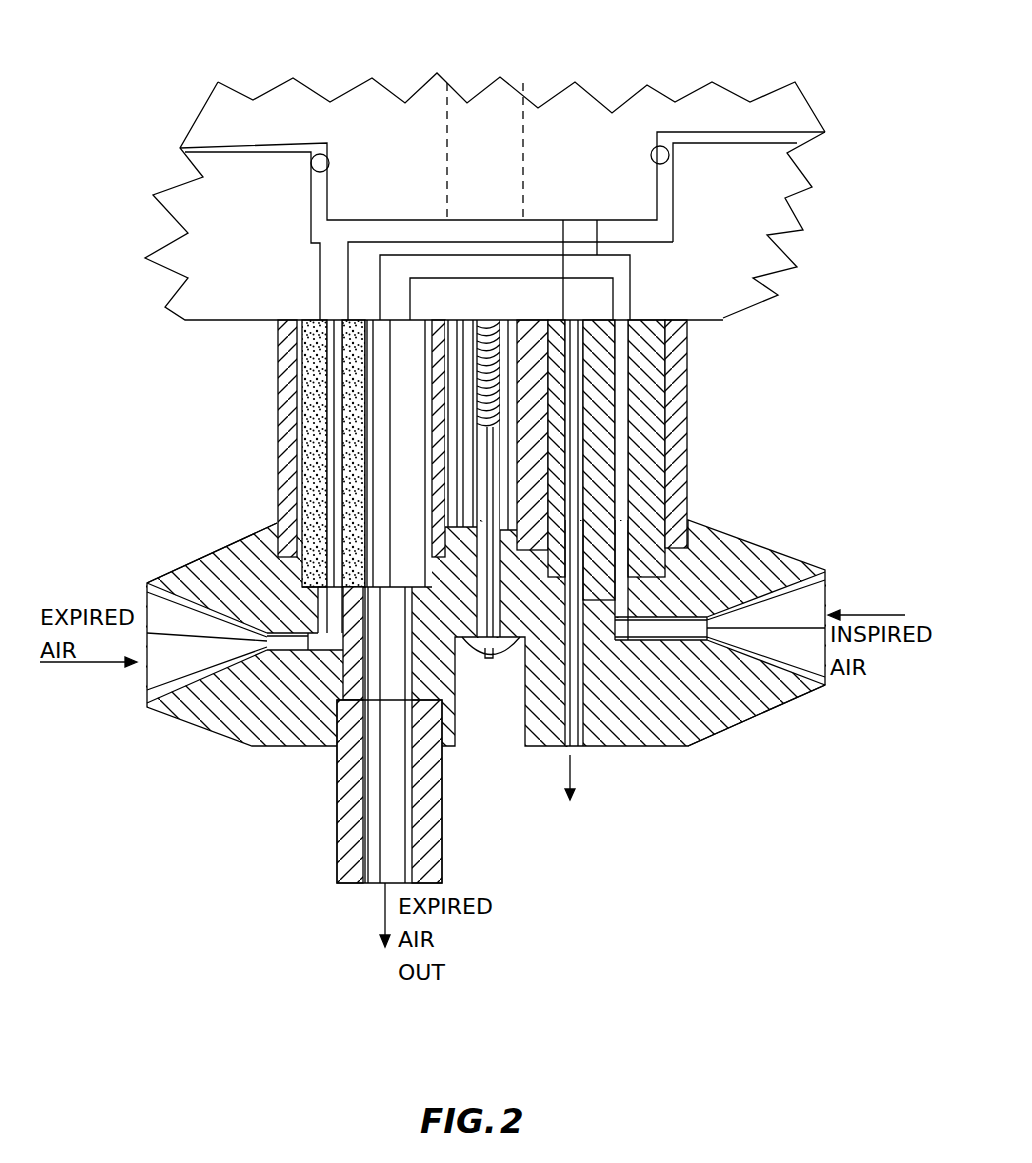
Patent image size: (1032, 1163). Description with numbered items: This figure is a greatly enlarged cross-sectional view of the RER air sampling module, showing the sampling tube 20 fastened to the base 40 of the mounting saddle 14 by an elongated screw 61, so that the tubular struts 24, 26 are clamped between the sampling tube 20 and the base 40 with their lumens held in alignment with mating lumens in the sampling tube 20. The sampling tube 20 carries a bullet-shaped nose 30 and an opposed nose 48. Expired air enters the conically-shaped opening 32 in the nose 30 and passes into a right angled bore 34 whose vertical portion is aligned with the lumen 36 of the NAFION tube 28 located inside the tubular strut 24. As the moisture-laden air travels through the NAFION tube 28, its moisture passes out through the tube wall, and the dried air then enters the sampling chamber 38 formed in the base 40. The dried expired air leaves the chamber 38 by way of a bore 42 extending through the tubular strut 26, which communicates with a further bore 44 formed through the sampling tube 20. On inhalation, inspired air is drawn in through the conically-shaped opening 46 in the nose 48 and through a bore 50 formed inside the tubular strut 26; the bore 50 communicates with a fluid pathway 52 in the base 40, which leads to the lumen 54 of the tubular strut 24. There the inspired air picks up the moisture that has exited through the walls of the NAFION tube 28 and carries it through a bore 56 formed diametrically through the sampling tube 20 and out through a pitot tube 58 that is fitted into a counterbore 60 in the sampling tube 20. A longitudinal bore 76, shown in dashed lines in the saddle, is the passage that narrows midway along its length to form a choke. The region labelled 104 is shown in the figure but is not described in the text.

The mounting saddle 14 is at (163, 210).
The sampling tube 20 is at (773, 545).
The tubular strut 24 is at (280, 455).
The tubular strut 26 is at (687, 427).
The NAFION tube 28 is at (304, 385).
The nose 30 is at (208, 553).
The conically-shaped opening 32 is at (187, 602).
The right angled bore 34 is at (308, 650).
The lumen 36 is at (327, 320).
The sampling chamber 38 is at (660, 215).
The base 40 is at (753, 268).
The bore 42 is at (573, 408).
The bore 44 is at (567, 698).
The conically-shaped opening 46 is at (773, 590).
The nose 48 is at (773, 705).
The bore 50 is at (618, 518).
The fluid pathway 52 is at (523, 267).
The lumen 54 is at (397, 387).
The bore 56 is at (367, 613).
The pitot tube 58 is at (337, 833).
The counterbore 60 is at (333, 720).
The elongated screw 61 is at (510, 642).
The longitudinal bore 76 is at (448, 137).
The chamber 104 is at (387, 140).